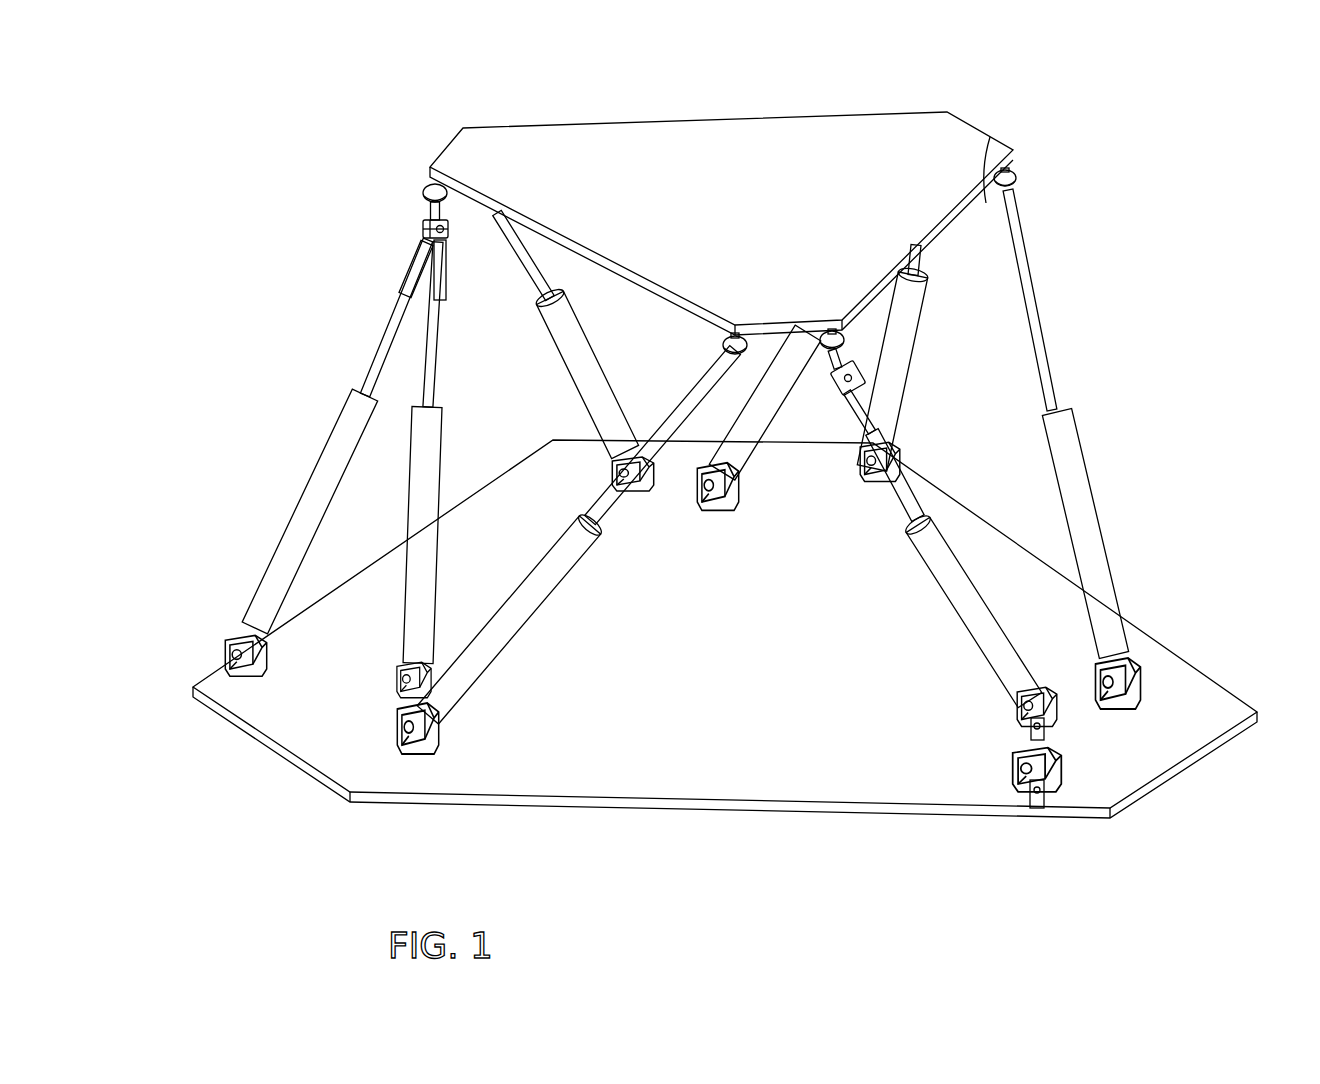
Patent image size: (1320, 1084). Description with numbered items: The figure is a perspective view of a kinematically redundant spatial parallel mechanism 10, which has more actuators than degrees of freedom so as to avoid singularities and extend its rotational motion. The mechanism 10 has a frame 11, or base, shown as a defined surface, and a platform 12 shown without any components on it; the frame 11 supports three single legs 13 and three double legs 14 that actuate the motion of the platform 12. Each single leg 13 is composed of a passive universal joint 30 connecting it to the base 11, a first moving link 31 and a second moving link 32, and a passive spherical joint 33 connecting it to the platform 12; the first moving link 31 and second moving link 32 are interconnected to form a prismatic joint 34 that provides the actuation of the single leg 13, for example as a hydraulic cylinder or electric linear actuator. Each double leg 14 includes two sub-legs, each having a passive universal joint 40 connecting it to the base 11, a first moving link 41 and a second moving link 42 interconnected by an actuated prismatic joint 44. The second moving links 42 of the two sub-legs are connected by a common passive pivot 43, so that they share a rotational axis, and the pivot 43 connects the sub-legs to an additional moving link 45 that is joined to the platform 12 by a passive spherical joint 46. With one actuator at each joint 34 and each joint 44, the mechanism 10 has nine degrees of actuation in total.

The kinematically redundant spatial parallel mechanism 10 is at (1108, 165).
The frame 11 is at (705, 780).
The platform 12 is at (760, 145).
The single leg 13 is at (553, 390).
The double leg 14 is at (318, 590).
The passive universal joint 30 is at (452, 722).
The first moving link 31 is at (520, 625).
The second moving link 32 is at (603, 498).
The passive spherical joint 33 is at (730, 348).
The prismatic joint 34 is at (580, 515).
The passive universal joint 40 is at (232, 640).
The first moving link 41 is at (318, 372).
The second moving link 42 is at (428, 342).
The common passive pivot 43 is at (430, 230).
The prismatic joint 44 is at (405, 410).
The additional moving link 45 is at (420, 212).
The passive spherical joint 46 is at (425, 182).